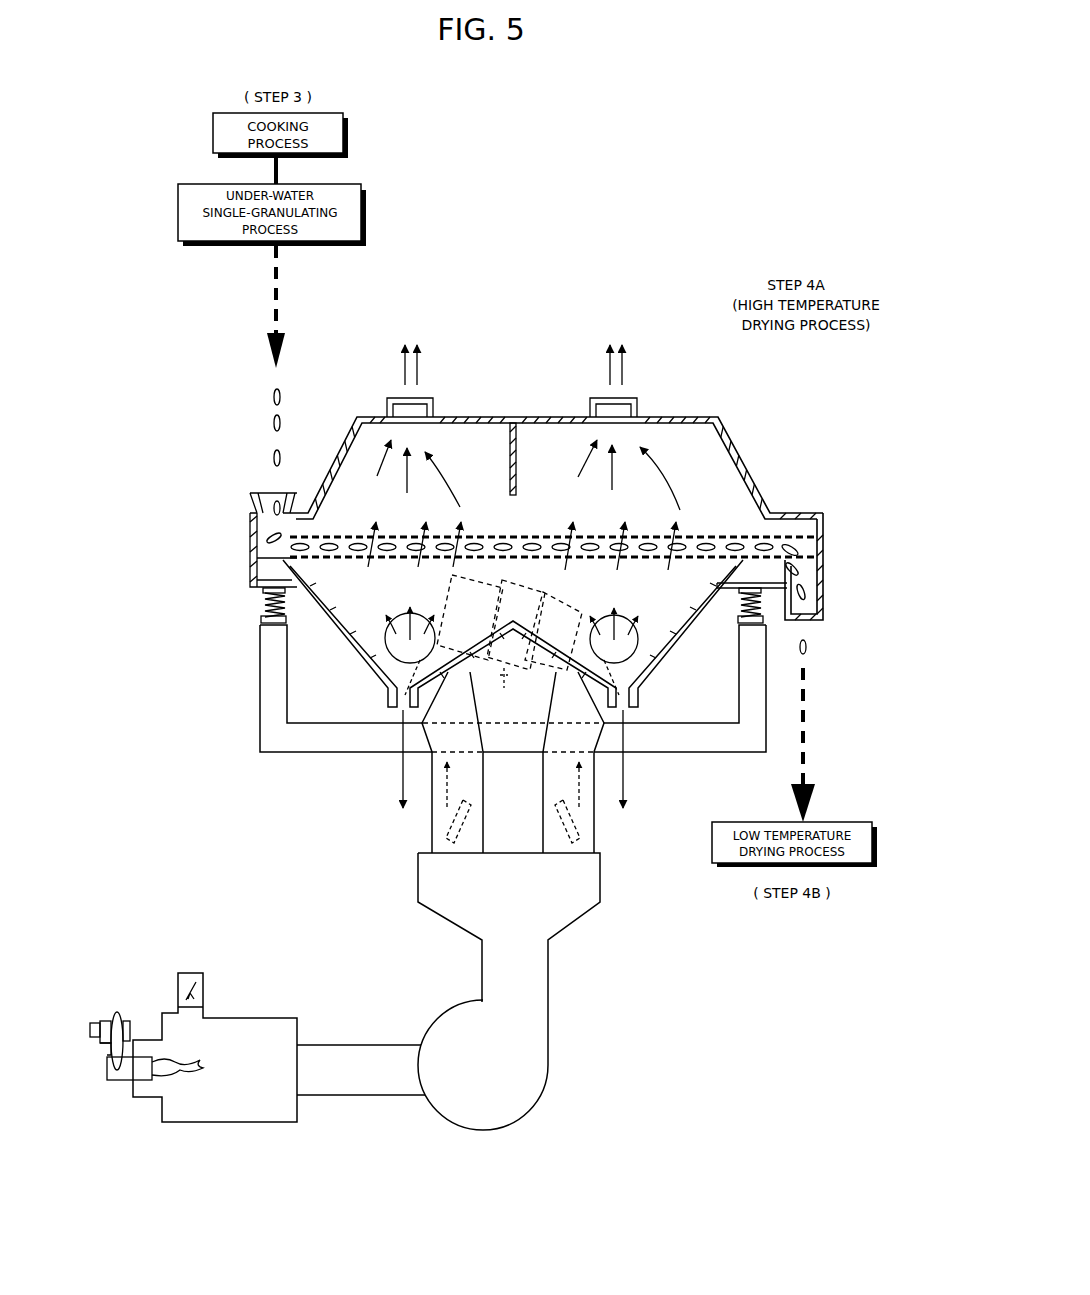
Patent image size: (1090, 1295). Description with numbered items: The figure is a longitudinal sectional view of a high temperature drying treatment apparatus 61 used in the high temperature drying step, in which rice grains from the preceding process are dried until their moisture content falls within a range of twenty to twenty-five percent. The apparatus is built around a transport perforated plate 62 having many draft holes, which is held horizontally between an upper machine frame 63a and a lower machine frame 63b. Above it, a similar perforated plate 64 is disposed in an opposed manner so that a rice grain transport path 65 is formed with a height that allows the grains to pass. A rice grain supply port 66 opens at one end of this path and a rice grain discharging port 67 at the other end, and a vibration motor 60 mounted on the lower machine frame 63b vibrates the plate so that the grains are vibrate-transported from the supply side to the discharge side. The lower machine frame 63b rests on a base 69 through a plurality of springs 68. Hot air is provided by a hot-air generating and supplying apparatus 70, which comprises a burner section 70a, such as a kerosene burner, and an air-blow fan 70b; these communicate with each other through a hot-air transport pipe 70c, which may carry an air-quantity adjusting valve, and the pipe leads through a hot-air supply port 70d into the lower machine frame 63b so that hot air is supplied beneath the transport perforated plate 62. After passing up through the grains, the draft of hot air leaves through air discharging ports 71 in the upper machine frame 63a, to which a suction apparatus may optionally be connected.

The vibration motor 60 is at (508, 580).
The high temperature drying treatment apparatus 61 is at (714, 244).
The transport perforated plate 62 is at (322, 572).
The upper machine frame 63a is at (357, 425).
The lower machine frame 63b is at (320, 603).
The perforated plate 64 is at (327, 530).
The rice grain transport path 65 is at (520, 543).
The rice grain supply port 66 is at (262, 492).
The rice grain discharging port 67 is at (826, 600).
The springs 68 is at (265, 597).
The base 69 is at (718, 746).
The hot-air generating and supplying apparatus 70 is at (325, 900).
The burner section 70a is at (243, 1027).
The air-blow fan 70b is at (525, 1110).
The hot-air transport pipe 70c is at (434, 832).
The hot-air supply port 70d is at (398, 645).
The air discharging ports 71 is at (431, 400).